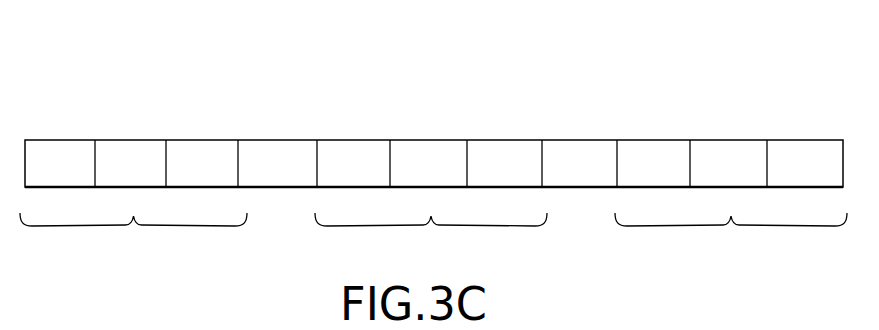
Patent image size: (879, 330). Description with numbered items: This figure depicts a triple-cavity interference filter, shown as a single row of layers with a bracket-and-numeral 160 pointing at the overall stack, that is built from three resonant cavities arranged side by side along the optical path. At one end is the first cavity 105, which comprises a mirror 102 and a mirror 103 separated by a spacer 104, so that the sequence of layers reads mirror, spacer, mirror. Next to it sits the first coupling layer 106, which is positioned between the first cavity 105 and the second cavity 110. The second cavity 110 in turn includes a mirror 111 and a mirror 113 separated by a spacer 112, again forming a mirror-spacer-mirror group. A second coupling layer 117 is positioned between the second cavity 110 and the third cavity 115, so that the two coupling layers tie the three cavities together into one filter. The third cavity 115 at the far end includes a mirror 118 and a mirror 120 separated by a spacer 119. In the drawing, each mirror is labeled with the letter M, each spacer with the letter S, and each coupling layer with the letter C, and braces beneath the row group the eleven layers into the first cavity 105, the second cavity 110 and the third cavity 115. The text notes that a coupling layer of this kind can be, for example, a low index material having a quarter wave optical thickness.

The mirror 102 is at (60, 140).
The spacer 104 is at (130, 140).
The mirror 103 is at (202, 140).
The first coupling layer 106 is at (277, 140).
The first cavity 105 is at (133, 238).
The mirror 111 is at (353, 140).
The spacer 112 is at (428, 140).
The mirror 113 is at (504, 140).
The second coupling layer 117 is at (579, 140).
The second cavity 110 is at (431, 238).
The mirror 118 is at (653, 140).
The spacer 119 is at (728, 140).
The mirror 120 is at (805, 140).
The third cavity 115 is at (731, 238).
The block sequence 160 is at (776, 70).